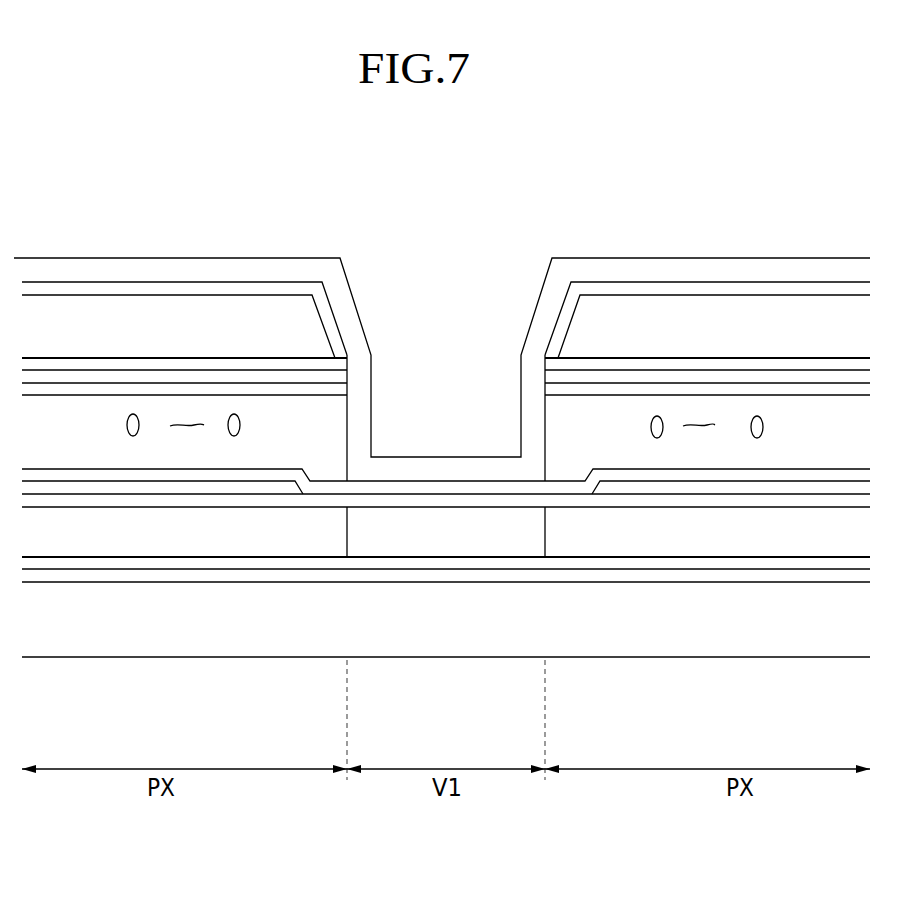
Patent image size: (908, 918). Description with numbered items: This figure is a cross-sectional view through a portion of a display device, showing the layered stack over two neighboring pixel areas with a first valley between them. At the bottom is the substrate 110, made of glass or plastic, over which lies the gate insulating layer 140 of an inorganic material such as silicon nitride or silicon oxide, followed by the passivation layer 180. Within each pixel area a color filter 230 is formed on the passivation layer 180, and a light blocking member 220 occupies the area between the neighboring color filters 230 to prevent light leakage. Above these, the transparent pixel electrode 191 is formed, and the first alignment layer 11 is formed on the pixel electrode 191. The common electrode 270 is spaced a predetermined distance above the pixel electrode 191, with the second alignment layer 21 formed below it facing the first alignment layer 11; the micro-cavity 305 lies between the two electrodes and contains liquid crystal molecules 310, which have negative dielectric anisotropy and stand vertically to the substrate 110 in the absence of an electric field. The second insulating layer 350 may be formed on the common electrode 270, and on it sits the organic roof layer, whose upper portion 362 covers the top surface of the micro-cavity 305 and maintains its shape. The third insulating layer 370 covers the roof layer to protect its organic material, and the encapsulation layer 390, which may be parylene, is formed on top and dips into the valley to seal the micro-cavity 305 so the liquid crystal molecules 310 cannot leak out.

The first alignment layer 11 is at (795, 473).
The second alignment layer 21 is at (67, 390).
The substrate 110 is at (152, 622).
The gate insulating layer 140 is at (214, 575).
The passivation layer 180 is at (278, 562).
The pixel electrode 191 is at (722, 488).
The light blocking member 220 is at (447, 538).
The color filter 230 is at (92, 538).
The common electrode 270 is at (118, 377).
The micro-cavity 305 is at (187, 425).
The liquid crystal molecules 310 is at (764, 427).
The second insulating layer 350 is at (765, 365).
The upper portion of the roof layer 362 is at (269, 320).
The third insulating layer 370 is at (820, 290).
The encapsulation layer 390 is at (593, 270).